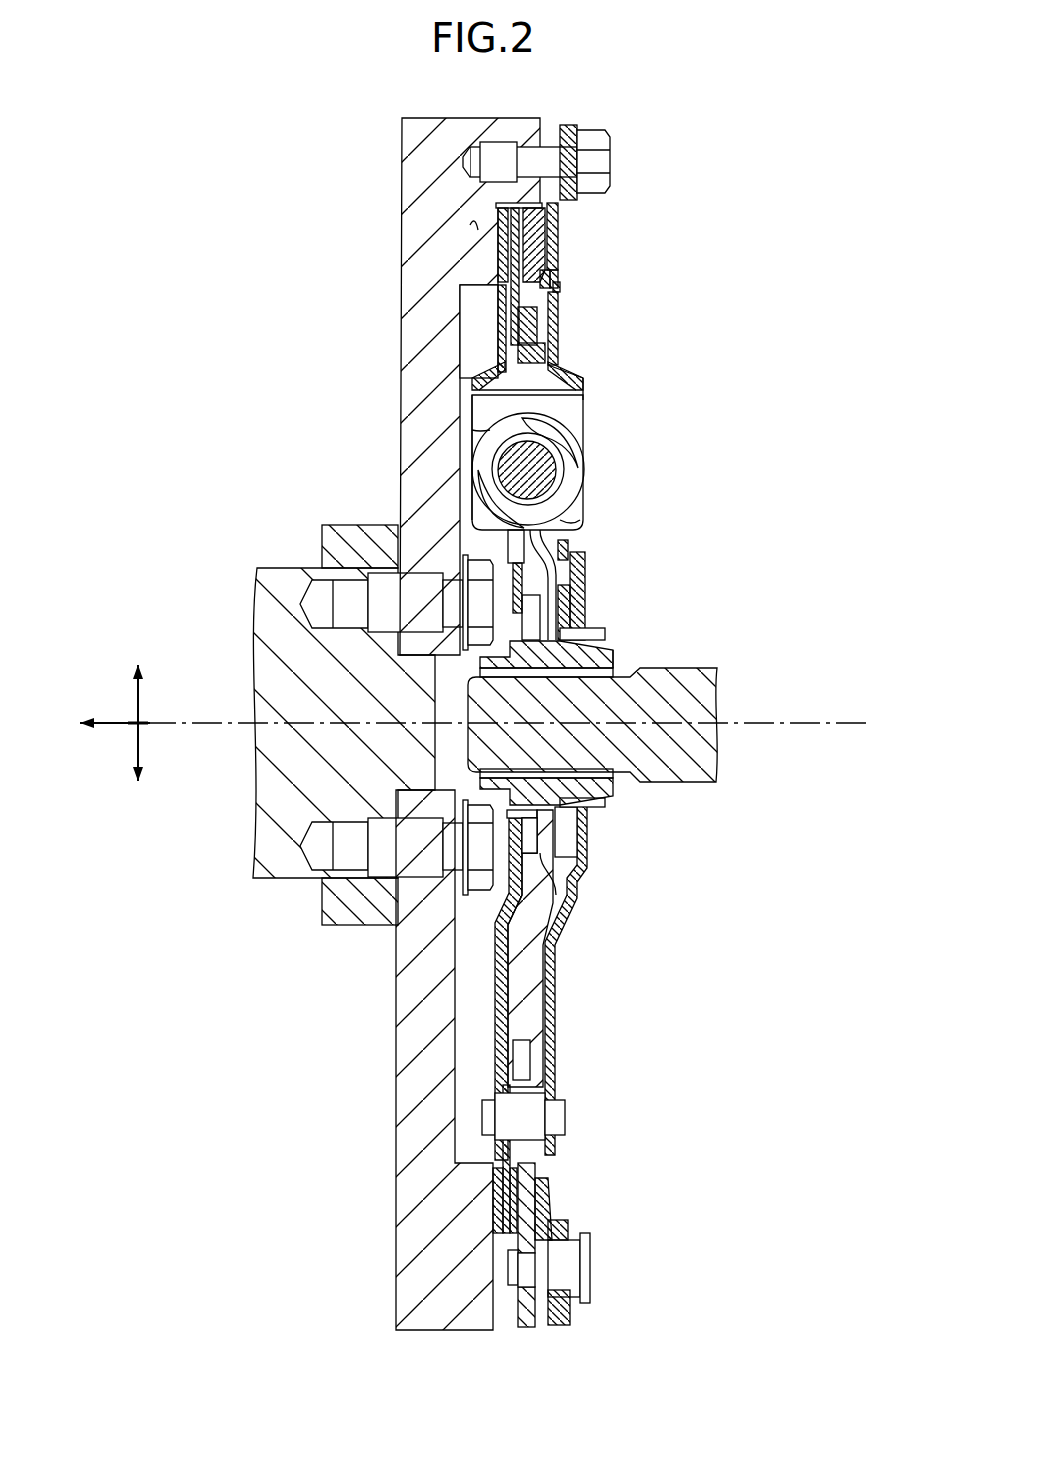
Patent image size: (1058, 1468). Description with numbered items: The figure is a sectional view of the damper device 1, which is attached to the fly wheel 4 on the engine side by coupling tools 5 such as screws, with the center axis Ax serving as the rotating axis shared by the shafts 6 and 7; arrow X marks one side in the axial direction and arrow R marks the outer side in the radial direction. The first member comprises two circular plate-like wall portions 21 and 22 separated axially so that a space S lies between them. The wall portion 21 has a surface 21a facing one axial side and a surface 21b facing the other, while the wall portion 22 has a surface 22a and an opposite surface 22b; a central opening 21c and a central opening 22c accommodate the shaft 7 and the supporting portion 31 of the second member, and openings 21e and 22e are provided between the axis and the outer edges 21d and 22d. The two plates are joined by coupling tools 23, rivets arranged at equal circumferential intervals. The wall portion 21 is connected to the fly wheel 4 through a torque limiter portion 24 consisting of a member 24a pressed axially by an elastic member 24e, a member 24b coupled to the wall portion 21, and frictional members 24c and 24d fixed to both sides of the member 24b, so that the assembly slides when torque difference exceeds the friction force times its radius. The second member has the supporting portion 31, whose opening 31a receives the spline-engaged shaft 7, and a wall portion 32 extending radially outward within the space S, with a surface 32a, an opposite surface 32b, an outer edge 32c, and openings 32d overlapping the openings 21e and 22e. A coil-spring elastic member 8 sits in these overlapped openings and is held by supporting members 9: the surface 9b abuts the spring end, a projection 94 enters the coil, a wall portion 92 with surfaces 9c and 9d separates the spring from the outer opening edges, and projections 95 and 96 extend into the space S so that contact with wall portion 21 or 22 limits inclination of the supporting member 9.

The damper device 1 is at (262, 152).
The fly wheel 4 is at (404, 194).
The coupling tool 5 is at (393, 597).
The shaft 6 is at (272, 805).
The shaft 7 is at (695, 762).
The elastic member 8 is at (588, 468).
The supporting member 9 is at (588, 508).
The surface 9b is at (478, 445).
The surface 9c is at (578, 420).
The surface 9d is at (572, 440).
The wall portion 92 is at (495, 430).
The projection 94 is at (540, 478).
The projection 95 is at (584, 392).
The projection 96 is at (560, 520).
The wall portion 21 is at (500, 250).
The surface 21a is at (505, 340).
The surface 21b is at (545, 262).
The opening 21c is at (512, 612).
The outer edge 21d is at (478, 230).
The opening 21e is at (478, 390).
The wall portion 22 is at (563, 348).
The surface 22a is at (554, 335).
The surface 22b is at (548, 340).
The opening 22c is at (590, 610).
The outer edge 22d is at (556, 292).
The opening 22e is at (583, 405).
The coupling tool 23 is at (522, 1120).
The torque limiter portion 24 is at (509, 196).
The member 24a is at (575, 205).
The member 24b is at (513, 210).
The frictional member 24c is at (500, 208).
The frictional member 24d is at (552, 203).
The elastic member 24e is at (560, 235).
The supporting portion 31 is at (600, 662).
The opening 31a is at (615, 690).
The wall portion 32 is at (516, 328).
The surface 32a is at (492, 299).
The surface 32b is at (557, 318).
The outer edge 32c is at (545, 280).
The opening 32d is at (500, 480).
The space S is at (560, 350).
The center axis Ax is at (856, 716).
The arrow R is at (146, 725).
The arrow X is at (115, 739).